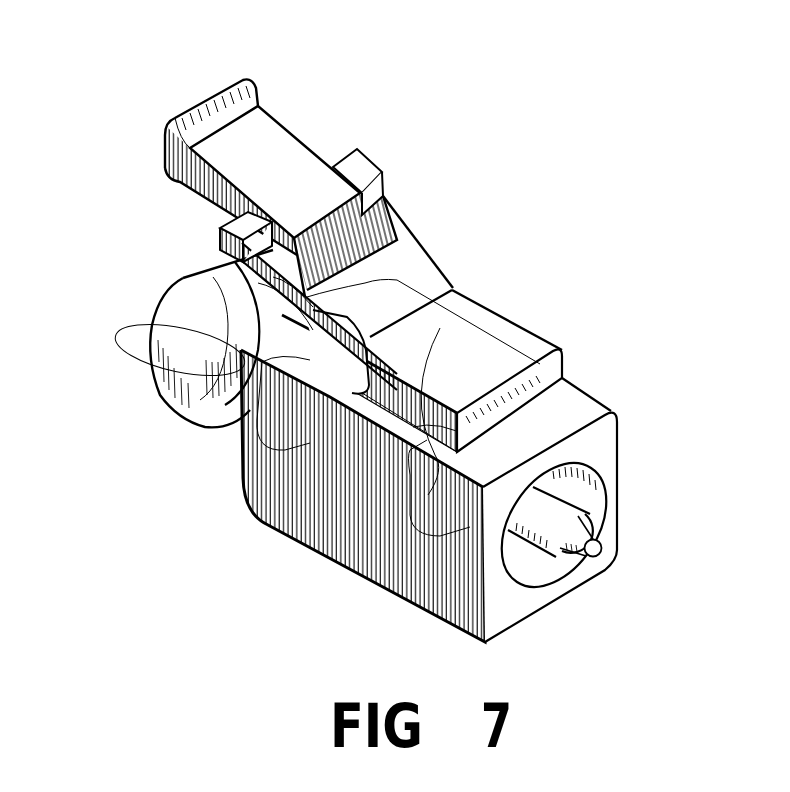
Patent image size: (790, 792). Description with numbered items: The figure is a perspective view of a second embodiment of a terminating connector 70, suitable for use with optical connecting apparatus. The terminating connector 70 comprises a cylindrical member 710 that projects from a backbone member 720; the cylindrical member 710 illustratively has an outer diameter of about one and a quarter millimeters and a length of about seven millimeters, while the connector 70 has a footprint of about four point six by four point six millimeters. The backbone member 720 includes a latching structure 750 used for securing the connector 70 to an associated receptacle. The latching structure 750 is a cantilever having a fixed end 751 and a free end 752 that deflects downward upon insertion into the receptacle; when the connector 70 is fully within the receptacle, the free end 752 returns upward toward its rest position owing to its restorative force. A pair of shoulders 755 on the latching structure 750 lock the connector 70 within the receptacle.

The terminating connector 70 is at (509, 196).
The cylindrical member 710 is at (581, 566).
The backbone member 720 is at (590, 393).
The latching structure 750 is at (162, 160).
The fixed end 751 is at (513, 331).
The free end 752 is at (274, 130).
The shoulders 755 is at (240, 223).